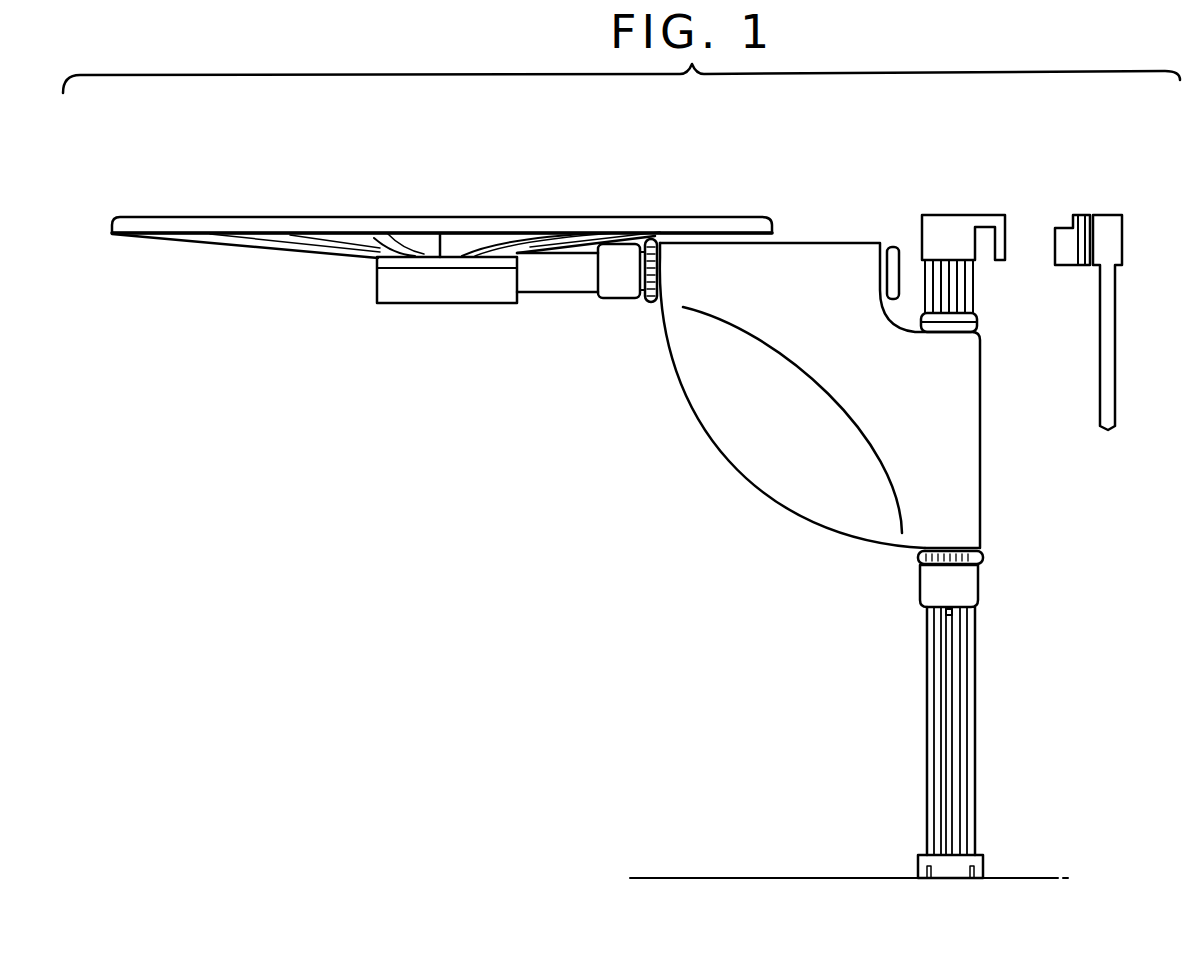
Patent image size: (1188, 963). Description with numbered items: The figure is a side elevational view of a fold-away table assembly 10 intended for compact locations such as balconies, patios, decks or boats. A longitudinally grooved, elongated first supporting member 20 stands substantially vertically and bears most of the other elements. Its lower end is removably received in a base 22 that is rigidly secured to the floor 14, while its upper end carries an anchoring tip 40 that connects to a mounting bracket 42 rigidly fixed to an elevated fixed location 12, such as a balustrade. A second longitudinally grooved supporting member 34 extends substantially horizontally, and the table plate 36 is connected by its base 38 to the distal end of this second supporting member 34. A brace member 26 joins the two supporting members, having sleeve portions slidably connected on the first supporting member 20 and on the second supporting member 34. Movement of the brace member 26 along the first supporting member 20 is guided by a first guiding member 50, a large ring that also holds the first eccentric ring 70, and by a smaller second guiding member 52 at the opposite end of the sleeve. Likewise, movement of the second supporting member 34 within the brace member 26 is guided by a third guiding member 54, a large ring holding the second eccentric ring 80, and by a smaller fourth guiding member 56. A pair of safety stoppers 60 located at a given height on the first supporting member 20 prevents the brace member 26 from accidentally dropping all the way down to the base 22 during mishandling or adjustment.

The table assembly 10 is at (503, 165).
The elevated fixed location 12 is at (1108, 218).
The floor 14 is at (670, 875).
The first supporting member 20 is at (955, 727).
The base 22 is at (940, 868).
The brace member 26 is at (742, 423).
The second supporting member 34 is at (548, 278).
The table plate 36 is at (289, 219).
The base of the table plate 38 is at (424, 292).
The anchoring tip 40 is at (940, 228).
The mounting bracket 42 is at (1060, 247).
The first guiding member 50 is at (965, 592).
The second guiding member 52 is at (978, 320).
The third guiding member 54 is at (610, 285).
The fourth guiding member 56 is at (891, 248).
The safety stoppers 60 is at (925, 617).
The first eccentric ring 70 is at (985, 555).
The second eccentric ring 80 is at (654, 302).